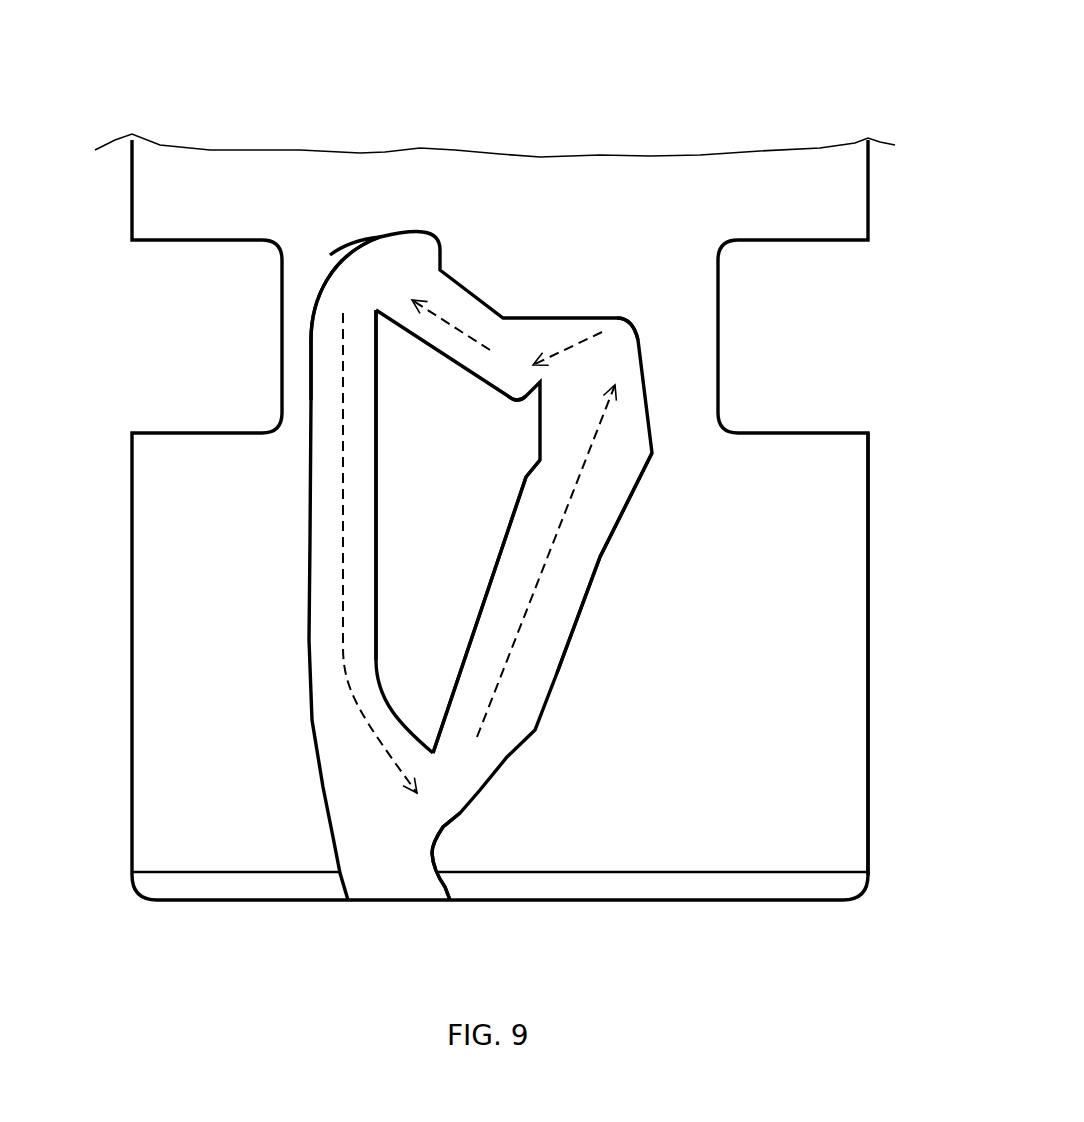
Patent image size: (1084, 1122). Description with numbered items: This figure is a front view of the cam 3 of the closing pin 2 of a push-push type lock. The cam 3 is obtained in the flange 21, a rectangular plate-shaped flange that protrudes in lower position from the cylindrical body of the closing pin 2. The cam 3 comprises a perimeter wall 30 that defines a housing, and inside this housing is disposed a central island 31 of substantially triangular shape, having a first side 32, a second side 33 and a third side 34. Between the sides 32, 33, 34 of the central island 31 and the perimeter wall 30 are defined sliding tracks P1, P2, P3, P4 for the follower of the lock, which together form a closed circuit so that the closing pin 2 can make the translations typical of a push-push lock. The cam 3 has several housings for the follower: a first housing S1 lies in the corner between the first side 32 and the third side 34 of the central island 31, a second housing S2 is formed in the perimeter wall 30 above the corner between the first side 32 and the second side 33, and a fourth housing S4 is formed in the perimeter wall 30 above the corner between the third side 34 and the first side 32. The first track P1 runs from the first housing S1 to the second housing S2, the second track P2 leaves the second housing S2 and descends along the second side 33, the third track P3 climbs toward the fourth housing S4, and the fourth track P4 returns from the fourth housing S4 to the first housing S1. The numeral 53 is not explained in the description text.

The closing pin 2 is at (873, 247).
The flange 21 is at (845, 568).
The cam 3 is at (577, 663).
The perimeter wall 30 is at (583, 592).
The central island 31 is at (400, 620).
The first side 32 is at (473, 367).
The second side 33 is at (372, 435).
The third side 34 is at (462, 688).
The constricted portion of seal 53 is at (440, 820).
The first housing S1 is at (516, 390).
The second housing S2 is at (358, 264).
The fourth housing S4 is at (623, 333).
The first track P1 is at (457, 317).
The second track P2 is at (342, 540).
The third track P3 is at (507, 672).
The fourth track P4 is at (580, 337).